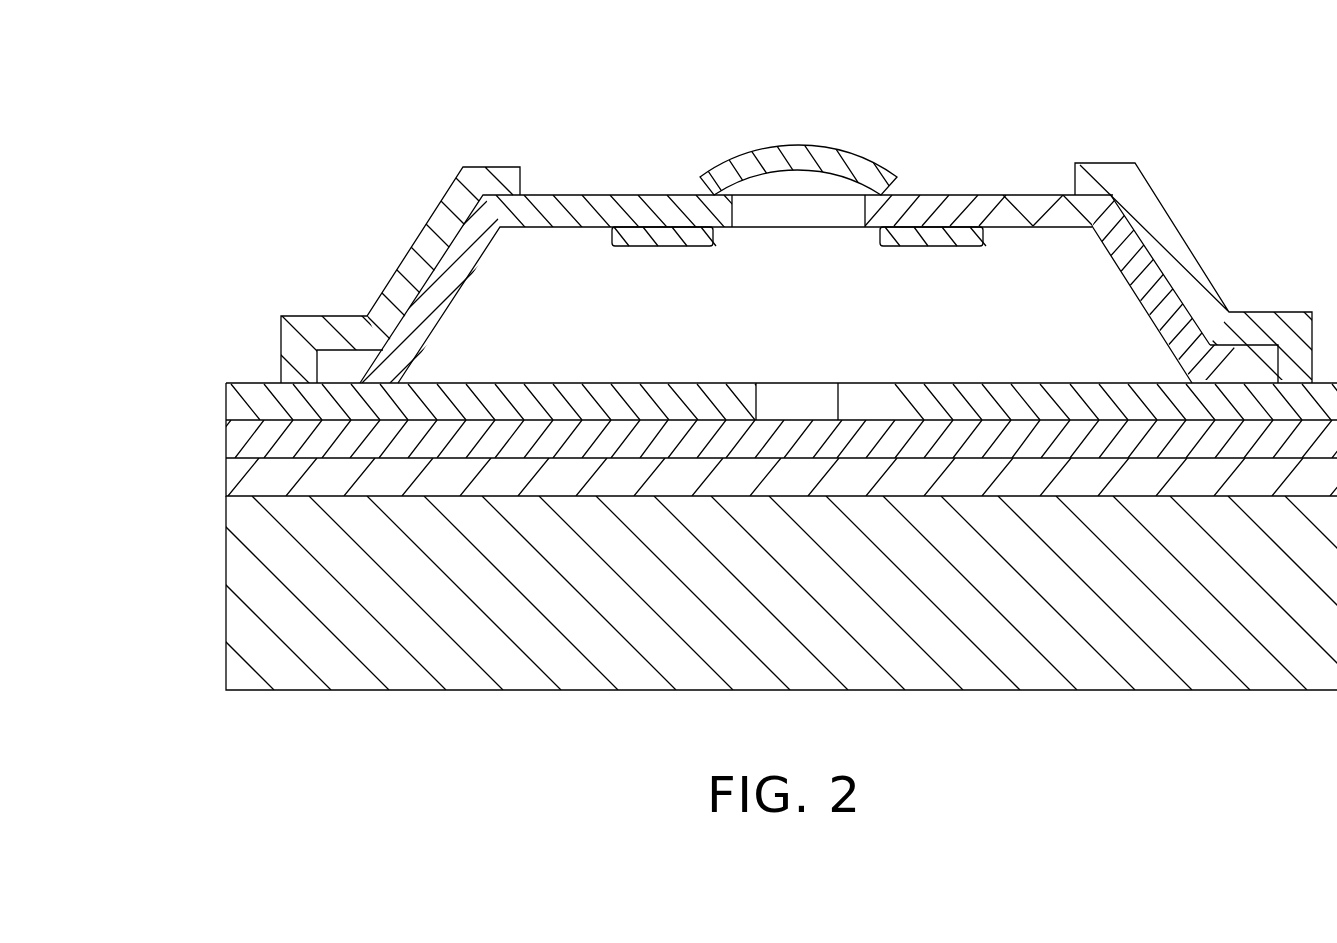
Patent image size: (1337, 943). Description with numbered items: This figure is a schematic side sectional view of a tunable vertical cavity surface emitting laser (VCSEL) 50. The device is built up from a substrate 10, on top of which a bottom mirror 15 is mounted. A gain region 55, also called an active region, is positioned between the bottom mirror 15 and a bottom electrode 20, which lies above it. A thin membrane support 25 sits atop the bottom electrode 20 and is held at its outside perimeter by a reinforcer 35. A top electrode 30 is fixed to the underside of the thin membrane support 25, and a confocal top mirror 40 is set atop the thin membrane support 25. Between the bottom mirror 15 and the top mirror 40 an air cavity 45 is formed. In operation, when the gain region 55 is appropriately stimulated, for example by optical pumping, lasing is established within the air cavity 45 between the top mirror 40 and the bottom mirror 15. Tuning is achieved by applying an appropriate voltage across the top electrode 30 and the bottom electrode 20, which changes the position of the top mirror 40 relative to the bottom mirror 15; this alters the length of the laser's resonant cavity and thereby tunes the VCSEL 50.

The substrate 10 is at (226, 547).
The bottom mirror 15 is at (226, 477).
The gain region 55 is at (226, 438).
The bottom electrode 20 is at (226, 398).
The thin membrane support 25 is at (442, 238).
The top electrode 30 is at (660, 247).
The reinforcer 35 is at (385, 278).
The confocal top mirror 40 is at (778, 145).
The air cavity 45 is at (762, 325).
The tunable vertical cavity surface emitting laser (VCSEL) 50 is at (378, 745).